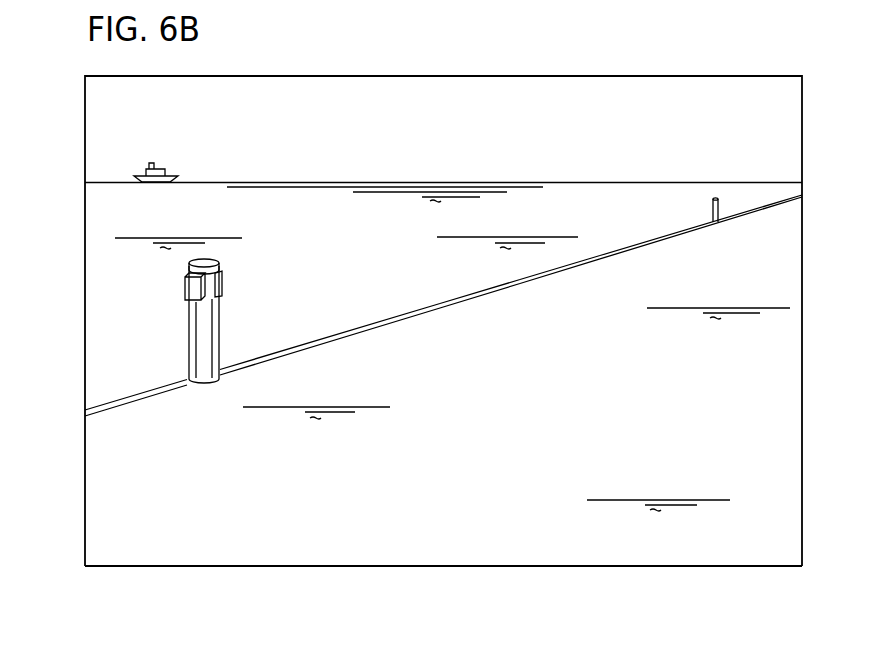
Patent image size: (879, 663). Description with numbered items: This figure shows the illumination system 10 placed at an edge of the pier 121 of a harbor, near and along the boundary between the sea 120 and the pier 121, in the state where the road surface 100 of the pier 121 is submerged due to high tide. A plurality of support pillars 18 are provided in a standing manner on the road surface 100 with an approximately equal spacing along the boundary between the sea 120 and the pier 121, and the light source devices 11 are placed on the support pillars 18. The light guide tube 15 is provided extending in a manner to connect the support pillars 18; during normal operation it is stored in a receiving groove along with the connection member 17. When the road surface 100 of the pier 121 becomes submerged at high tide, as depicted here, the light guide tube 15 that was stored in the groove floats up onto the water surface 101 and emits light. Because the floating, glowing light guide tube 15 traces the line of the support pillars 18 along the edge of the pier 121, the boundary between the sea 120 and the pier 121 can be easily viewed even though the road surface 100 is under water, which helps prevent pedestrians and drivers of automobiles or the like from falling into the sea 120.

The illumination system 10 is at (732, 205).
The light source device 11 is at (185, 284).
The light guide tube 15 is at (470, 294).
The connection member 17 is at (414, 311).
The support pillar 18 is at (206, 262).
The road surface 100 is at (443, 354).
The water surface 101 is at (608, 392).
The sea 120 is at (654, 193).
The pier 121 is at (362, 548).